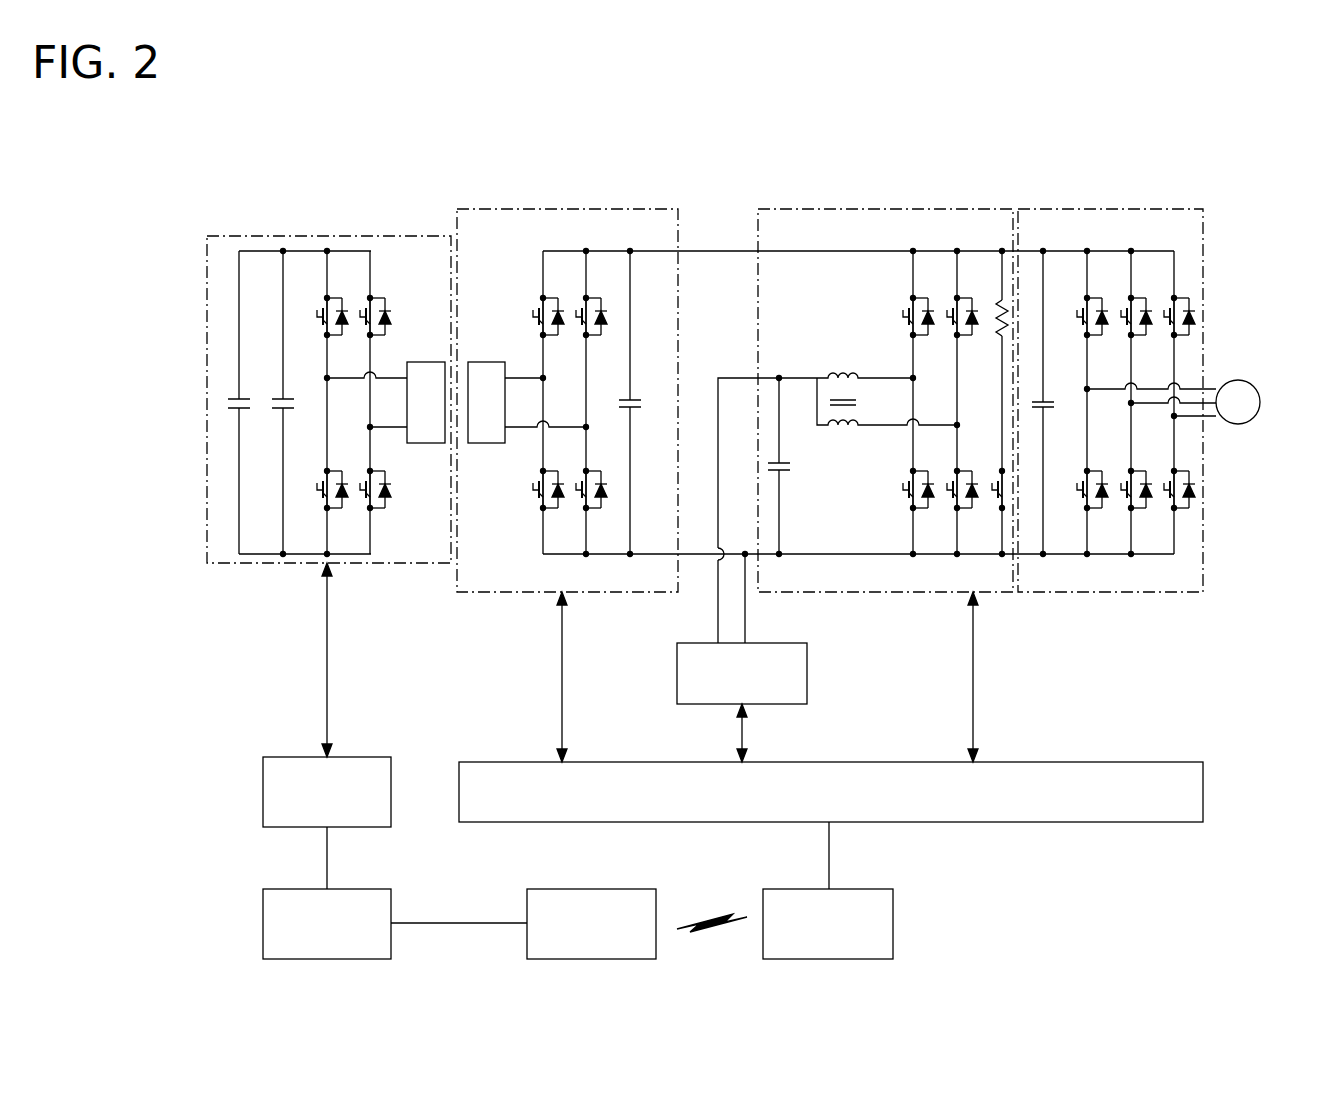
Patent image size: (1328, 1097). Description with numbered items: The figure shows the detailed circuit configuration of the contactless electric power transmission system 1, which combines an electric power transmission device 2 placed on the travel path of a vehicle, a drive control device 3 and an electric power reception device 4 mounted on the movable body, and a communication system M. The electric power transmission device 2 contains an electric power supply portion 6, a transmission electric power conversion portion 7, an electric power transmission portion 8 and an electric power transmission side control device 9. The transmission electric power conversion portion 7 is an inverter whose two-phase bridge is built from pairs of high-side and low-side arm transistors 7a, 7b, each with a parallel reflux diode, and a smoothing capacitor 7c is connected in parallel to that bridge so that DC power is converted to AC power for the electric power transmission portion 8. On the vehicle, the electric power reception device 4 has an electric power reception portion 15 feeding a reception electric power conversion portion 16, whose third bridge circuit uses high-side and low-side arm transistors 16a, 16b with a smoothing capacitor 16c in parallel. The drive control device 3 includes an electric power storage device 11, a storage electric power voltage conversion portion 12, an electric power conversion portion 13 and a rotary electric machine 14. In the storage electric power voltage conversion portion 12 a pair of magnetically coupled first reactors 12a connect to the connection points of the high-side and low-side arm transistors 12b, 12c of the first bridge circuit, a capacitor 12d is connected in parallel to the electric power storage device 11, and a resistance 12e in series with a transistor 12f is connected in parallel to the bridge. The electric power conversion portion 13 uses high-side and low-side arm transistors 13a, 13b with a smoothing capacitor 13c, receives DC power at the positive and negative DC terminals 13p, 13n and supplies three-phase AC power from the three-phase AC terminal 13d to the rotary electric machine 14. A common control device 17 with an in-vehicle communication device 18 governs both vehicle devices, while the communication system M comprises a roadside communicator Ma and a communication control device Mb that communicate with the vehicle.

The contactless electric power transmission system 1 is at (1228, 128).
The electric power transmission device 2 is at (413, 212).
The drive control device 3 is at (1198, 165).
The electric power reception device 4 is at (655, 207).
The electric power supply portion 6 is at (240, 398).
The transmission electric power conversion portion 7 is at (370, 252).
The high-side arm transistor 7a is at (369, 297).
The low-side arm transistor 7b is at (369, 508).
The capacitor 7c is at (284, 398).
The electric power transmission portion 8 is at (426, 361).
The electric power transmission side control device 9 is at (373, 757).
The electric power storage device 11 is at (807, 670).
The storage electric power voltage conversion portion 12 is at (788, 208).
The first reactor 12a is at (858, 424).
The high-side arm transistor 12b is at (956, 297).
The low-side arm transistor 12c is at (956, 508).
The capacitor 12d is at (792, 468).
The resistance 12e is at (1004, 298).
The transistor 12f is at (1000, 470).
The electric power conversion portion 13 is at (1203, 224).
The high-side arm transistor 13a is at (1173, 297).
The low-side arm transistor 13b is at (1173, 508).
The capacitor 13c is at (1046, 400).
The three-phase AC terminal 13d is at (1087, 389).
The DC terminal of negative electrode 13n is at (1042, 556).
The DC terminal of positive electrode 13p is at (1044, 250).
The rotary electric machine 14 is at (1238, 380).
The electric power reception portion 15 is at (488, 361).
The reception electric power conversion portion 16 is at (557, 251).
The high-side arm transistor 16a is at (585, 297).
The low-side arm transistor 16b is at (585, 471).
The capacitor 16c is at (635, 398).
The control device 17 is at (1166, 761).
The in-vehicle communication device 18 is at (893, 920).
The communication system M is at (500, 888).
The roadside communicator Ma is at (648, 889).
The communication control device Mb is at (373, 889).